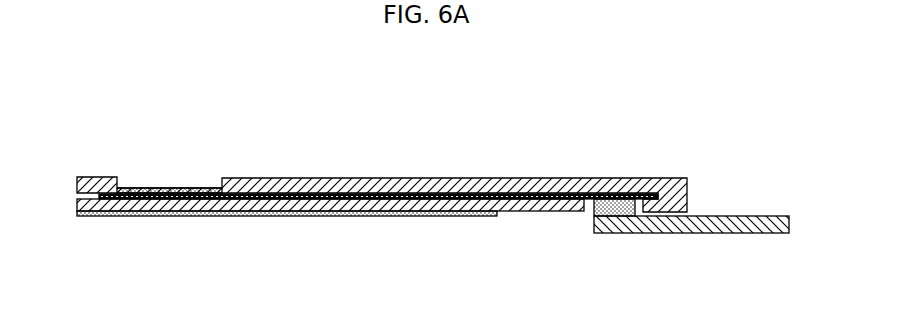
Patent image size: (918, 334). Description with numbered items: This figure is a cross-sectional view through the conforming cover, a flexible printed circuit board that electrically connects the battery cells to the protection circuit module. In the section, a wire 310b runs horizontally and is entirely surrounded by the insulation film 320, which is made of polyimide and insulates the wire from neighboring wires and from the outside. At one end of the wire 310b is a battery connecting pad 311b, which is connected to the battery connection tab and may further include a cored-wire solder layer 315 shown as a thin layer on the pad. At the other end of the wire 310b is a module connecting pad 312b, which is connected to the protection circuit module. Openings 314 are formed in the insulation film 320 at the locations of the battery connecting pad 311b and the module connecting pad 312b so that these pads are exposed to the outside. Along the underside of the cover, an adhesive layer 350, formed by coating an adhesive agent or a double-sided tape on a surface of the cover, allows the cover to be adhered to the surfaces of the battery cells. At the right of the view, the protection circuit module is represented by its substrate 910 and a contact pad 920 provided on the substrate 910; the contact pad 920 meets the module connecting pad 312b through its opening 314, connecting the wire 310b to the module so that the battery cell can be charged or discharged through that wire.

The wire 310b is at (343, 178).
The module connecting pad 312b is at (619, 178).
The battery connecting pad 311b is at (170, 211).
The opening 314 is at (152, 172).
The cored-wire solder layer 315 is at (190, 178).
The insulation film 320 is at (77, 183).
The adhesive layer 350 is at (110, 216).
The substrate 910 is at (727, 229).
The contact pad 920 is at (610, 216).